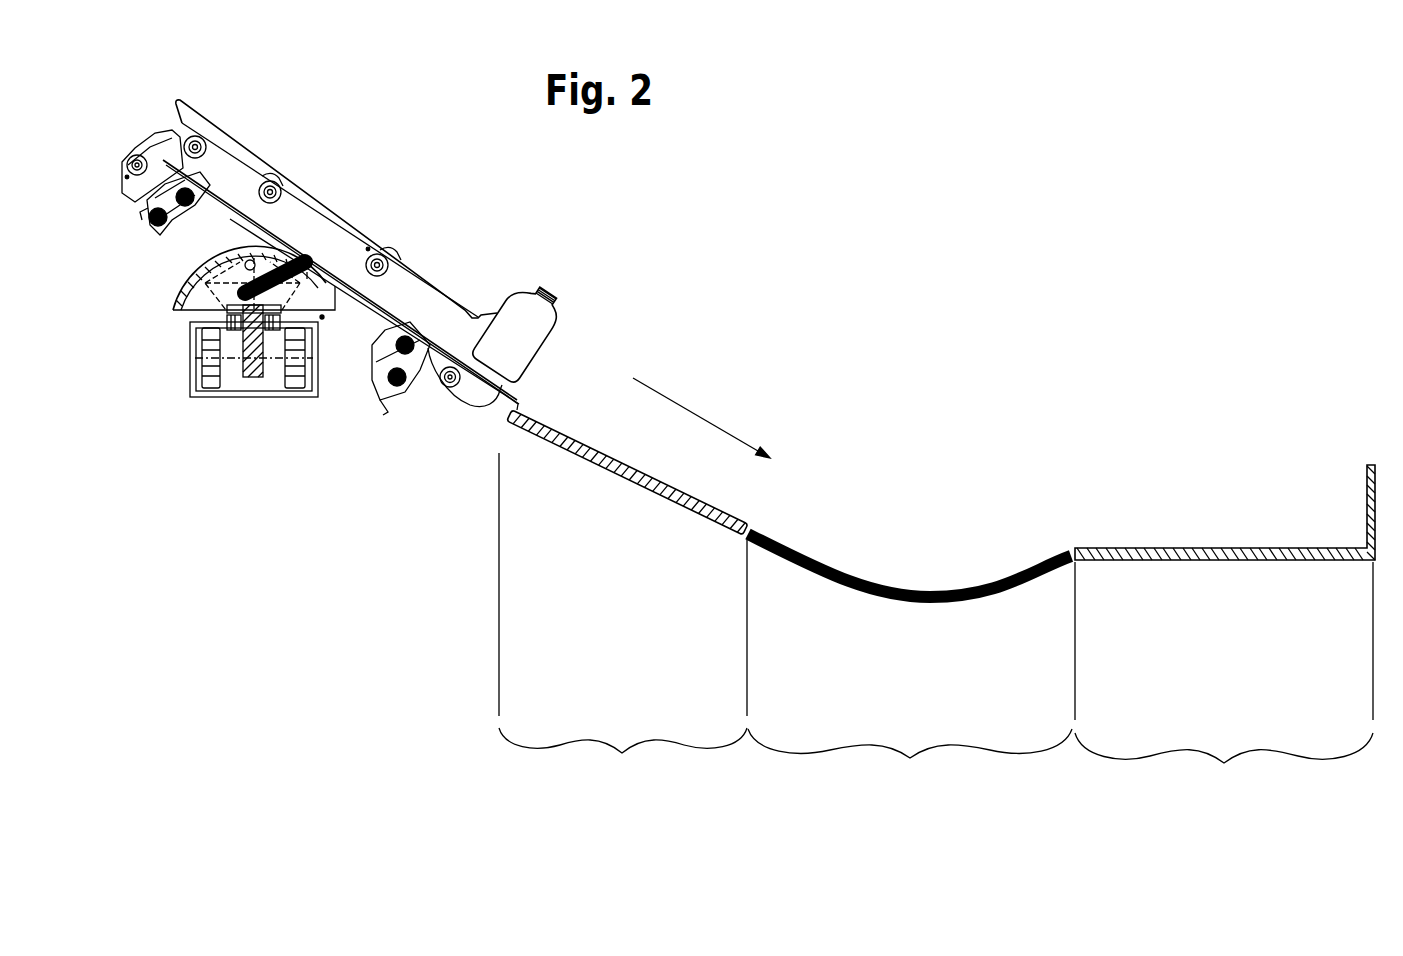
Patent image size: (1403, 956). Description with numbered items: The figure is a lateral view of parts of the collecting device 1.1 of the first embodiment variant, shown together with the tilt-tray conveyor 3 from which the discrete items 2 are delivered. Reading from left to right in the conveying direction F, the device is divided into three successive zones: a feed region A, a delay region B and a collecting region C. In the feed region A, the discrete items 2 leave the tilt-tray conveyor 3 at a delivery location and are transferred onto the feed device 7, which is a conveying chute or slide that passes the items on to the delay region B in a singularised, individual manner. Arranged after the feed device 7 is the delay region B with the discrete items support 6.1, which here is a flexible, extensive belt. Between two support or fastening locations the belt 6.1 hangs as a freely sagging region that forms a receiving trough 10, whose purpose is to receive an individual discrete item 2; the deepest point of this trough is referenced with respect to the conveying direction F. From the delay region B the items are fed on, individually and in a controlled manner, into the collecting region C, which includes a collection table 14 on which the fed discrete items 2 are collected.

The collecting device 1.1 is at (941, 410).
The discrete items 2 is at (523, 336).
The tilt-tray conveyor 3 is at (344, 307).
The discrete items support 6.1 is at (909, 527).
The feed device 7 is at (752, 404).
The receiving trough 10 is at (970, 588).
The collection table 14 is at (1228, 519).
The conveying direction F is at (697, 415).
The feed region A is at (623, 625).
The delay region B is at (910, 763).
The collecting region C is at (1224, 682).